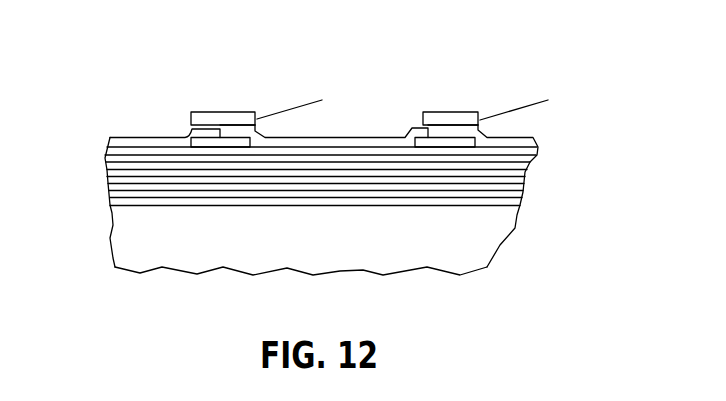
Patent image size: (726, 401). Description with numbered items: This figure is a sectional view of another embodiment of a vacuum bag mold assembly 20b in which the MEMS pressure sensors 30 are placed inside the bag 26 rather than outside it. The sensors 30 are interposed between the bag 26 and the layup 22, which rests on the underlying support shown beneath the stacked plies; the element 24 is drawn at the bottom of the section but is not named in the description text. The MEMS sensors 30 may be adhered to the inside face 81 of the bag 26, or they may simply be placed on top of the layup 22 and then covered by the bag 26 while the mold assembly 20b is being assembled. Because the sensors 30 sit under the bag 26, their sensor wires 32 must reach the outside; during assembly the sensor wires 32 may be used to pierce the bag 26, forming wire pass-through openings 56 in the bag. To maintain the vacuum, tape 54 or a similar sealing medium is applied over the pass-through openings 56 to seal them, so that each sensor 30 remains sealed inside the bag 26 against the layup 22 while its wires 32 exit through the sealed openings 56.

The vacuum bag mold assembly 20b is at (523, 63).
The layup 22 is at (122, 181).
The substrate 24 is at (143, 245).
The bag 26 is at (127, 143).
The MEMS pressure sensors 30 is at (420, 126).
The sensor wires 32 is at (286, 113).
The tape 54 is at (445, 125).
The wire pass-through openings 56 is at (192, 128).
The inside face of the bag 81 is at (333, 153).